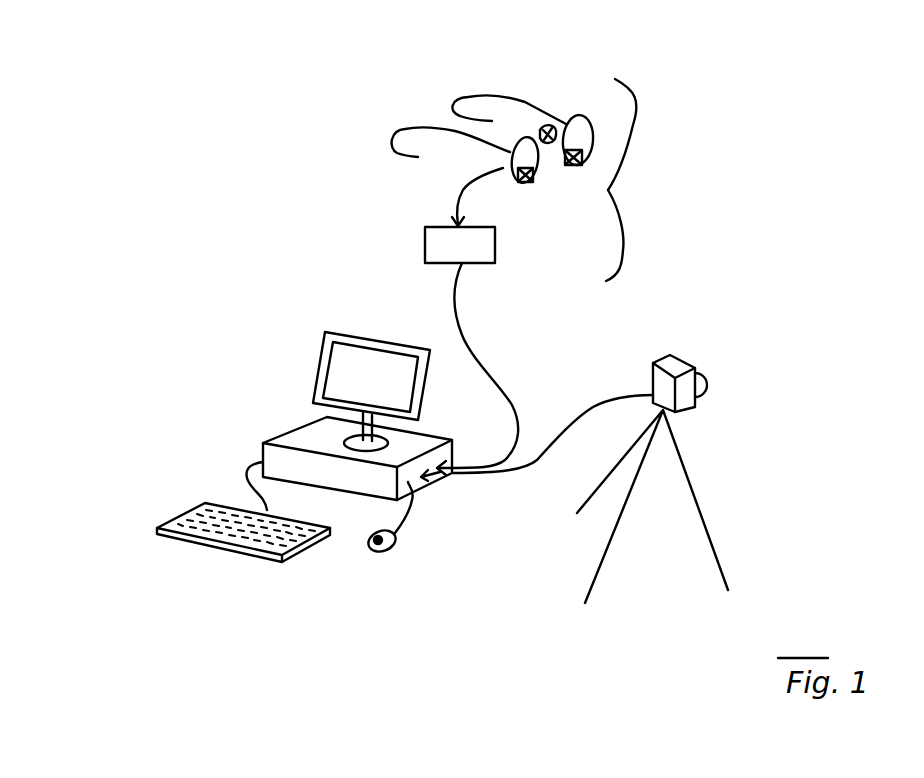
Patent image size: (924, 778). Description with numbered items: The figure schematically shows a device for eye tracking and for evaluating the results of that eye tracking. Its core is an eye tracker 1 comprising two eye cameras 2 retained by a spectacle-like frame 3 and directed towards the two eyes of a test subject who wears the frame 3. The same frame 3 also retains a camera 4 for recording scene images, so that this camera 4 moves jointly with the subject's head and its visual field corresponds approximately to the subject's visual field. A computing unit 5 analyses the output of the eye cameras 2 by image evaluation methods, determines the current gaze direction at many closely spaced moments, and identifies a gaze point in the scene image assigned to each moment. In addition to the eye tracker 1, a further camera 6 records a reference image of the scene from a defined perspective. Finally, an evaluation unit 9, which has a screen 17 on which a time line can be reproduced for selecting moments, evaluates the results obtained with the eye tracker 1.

The eye tracker 1 is at (641, 180).
The eye cameras 2 is at (529, 185).
The spectacle-like frame 3 is at (538, 114).
The camera 4 is at (537, 131).
The computing unit 5 is at (495, 247).
The further camera 6 is at (687, 415).
The evaluation unit 9 is at (296, 430).
The screen 17 is at (367, 336).